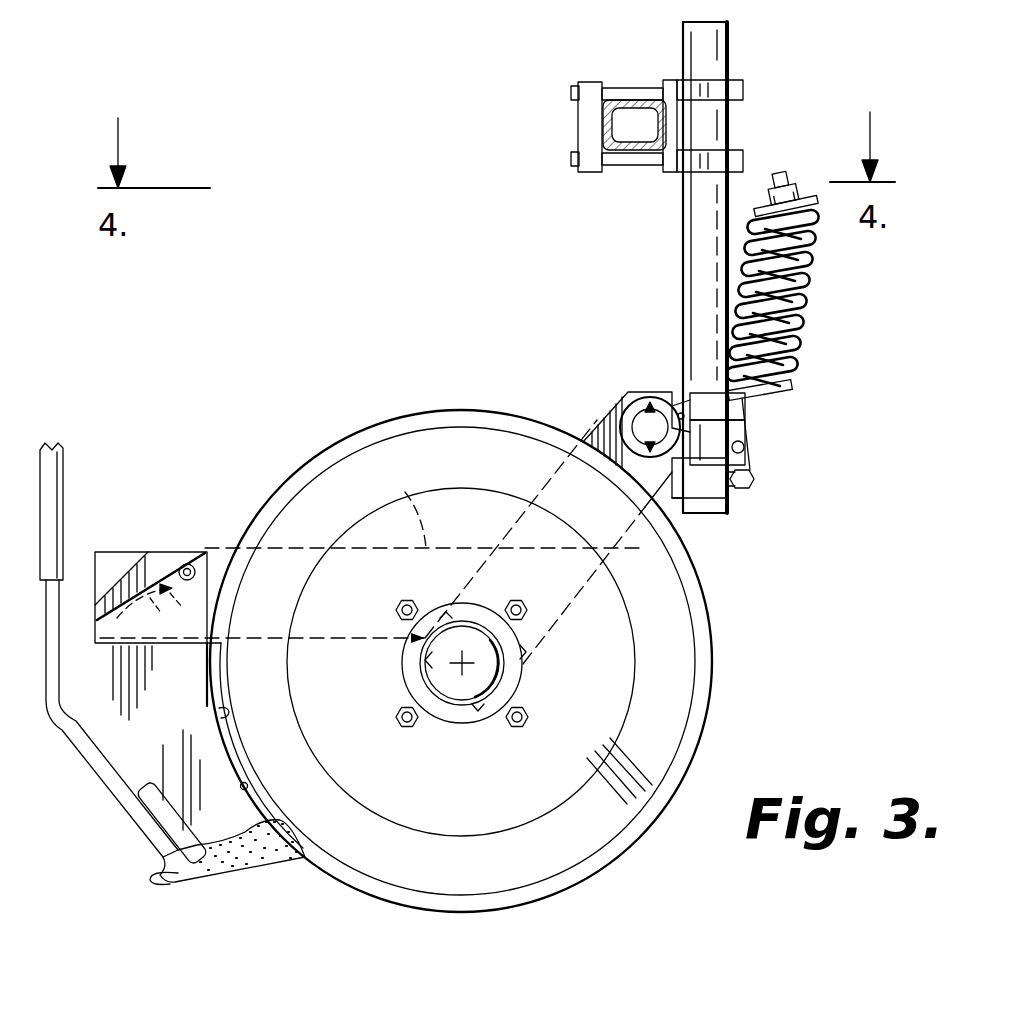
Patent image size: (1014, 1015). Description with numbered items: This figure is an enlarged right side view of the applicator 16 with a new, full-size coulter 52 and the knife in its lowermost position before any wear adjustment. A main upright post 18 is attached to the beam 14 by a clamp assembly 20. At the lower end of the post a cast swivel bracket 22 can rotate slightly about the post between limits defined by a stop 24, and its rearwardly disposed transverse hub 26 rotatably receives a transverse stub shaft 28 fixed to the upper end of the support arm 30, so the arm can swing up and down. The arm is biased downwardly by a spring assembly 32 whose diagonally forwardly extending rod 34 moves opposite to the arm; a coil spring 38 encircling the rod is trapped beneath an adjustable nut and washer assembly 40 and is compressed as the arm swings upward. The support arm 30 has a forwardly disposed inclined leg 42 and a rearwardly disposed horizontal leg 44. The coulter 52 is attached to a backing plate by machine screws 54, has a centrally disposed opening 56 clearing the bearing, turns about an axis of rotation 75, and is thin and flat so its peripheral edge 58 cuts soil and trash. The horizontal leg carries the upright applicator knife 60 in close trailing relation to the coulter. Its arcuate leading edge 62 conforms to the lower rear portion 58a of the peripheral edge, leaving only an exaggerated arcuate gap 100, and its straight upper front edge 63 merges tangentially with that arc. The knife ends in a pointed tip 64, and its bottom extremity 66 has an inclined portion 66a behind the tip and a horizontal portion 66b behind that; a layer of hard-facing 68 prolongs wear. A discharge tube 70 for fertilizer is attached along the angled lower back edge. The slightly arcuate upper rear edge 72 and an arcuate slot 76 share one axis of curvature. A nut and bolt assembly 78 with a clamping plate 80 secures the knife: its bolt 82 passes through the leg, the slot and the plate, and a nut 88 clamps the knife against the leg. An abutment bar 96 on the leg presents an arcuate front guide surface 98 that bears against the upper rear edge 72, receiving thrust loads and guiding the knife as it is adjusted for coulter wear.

The beam 14 is at (641, 135).
The applicator 16 is at (742, 124).
The main upright post 18 is at (706, 40).
The clamp assembly 20 is at (643, 88).
The swivel bracket 22 is at (727, 500).
The stop 24 is at (723, 452).
The transverse hub 26 is at (641, 411).
The transverse stub shaft 28 is at (646, 420).
The support arm 30 is at (592, 410).
The spring assembly 32 is at (768, 404).
The rod 34 is at (780, 352).
The coil spring 38 is at (790, 325).
The adjustable nut and washer assembly 40 is at (816, 194).
The inclined leg 42 is at (592, 442).
The horizontal leg 44 is at (406, 495).
The coulter 52 is at (724, 689).
The machine screws 54 is at (526, 716).
The centrally disposed opening 56 is at (440, 713).
The peripheral edge 58 is at (700, 586).
The lower rear portion of peripheral edge 58a is at (248, 786).
The applicator knife 60 is at (141, 841).
The arcuate leading edge 62 is at (219, 712).
The upper front edge 63 is at (218, 598).
The pointed tip 64 is at (313, 862).
The bottom extremity 66 is at (230, 886).
The inclined portion 66a is at (272, 870).
The horizontal portion 66b is at (200, 885).
The hard-facing 68 is at (185, 882).
The discharge tube 70 is at (108, 778).
The upper rear edge 72 is at (80, 660).
The axis of rotation 75 is at (470, 662).
The slot 76 is at (123, 631).
The nut and bolt assembly 78 is at (205, 550).
The clamping plate 80 is at (206, 645).
The bolt 82 is at (188, 562).
The nut 88 is at (158, 604).
The abutment bar 96 is at (106, 572).
The arcuate front guide surface 98 is at (138, 580).
The arcuate gap 100 is at (232, 752).